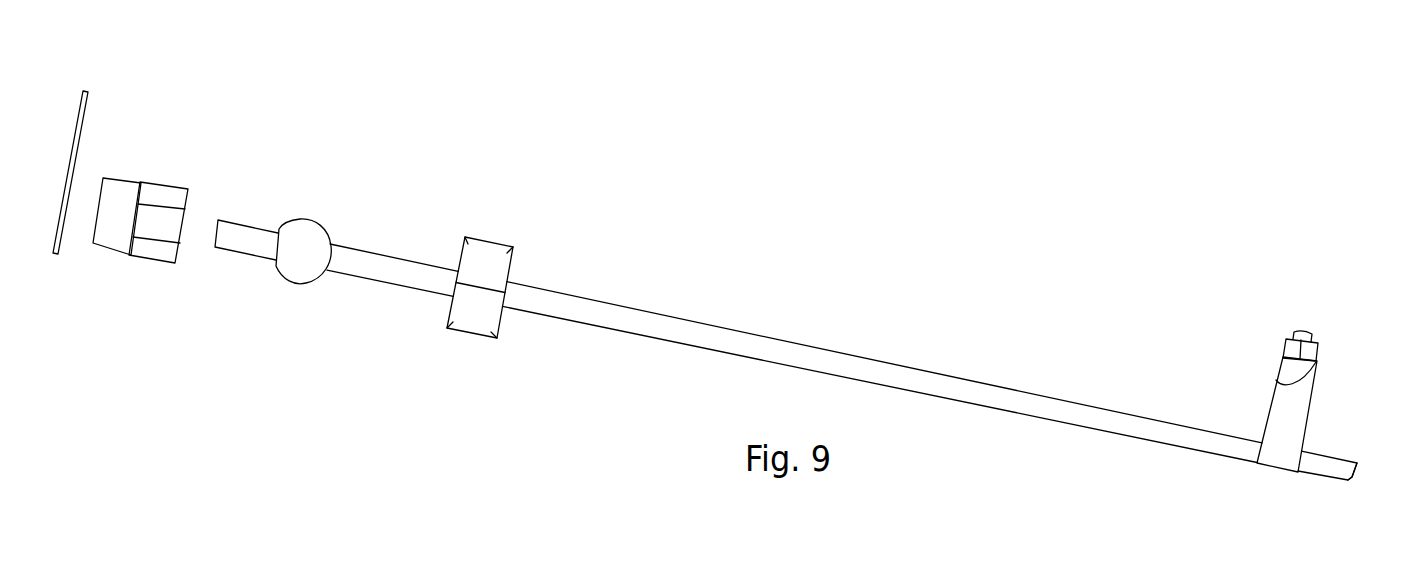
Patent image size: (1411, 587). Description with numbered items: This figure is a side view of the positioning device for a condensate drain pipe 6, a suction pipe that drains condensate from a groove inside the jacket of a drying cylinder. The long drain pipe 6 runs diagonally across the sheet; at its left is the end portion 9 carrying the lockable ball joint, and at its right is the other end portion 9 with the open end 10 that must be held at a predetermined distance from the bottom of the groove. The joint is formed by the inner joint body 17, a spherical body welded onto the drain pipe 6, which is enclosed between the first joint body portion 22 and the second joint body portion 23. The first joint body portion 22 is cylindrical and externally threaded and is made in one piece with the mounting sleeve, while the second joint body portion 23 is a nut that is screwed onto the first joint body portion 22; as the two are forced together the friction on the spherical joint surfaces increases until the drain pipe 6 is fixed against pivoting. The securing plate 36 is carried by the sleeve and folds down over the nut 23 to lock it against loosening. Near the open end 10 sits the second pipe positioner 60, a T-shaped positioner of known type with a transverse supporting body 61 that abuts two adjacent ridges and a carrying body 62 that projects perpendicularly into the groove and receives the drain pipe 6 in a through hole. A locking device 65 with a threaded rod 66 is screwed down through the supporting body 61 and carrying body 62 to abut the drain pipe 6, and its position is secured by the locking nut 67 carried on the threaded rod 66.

The securing plate 36 is at (82, 132).
The first joint body portion 22 is at (150, 262).
The end portion 9 is at (233, 253).
The inner joint body 17 is at (300, 283).
The drain pipe 6 is at (1060, 422).
The second joint body portion 23 is at (468, 335).
The open end 10 is at (1352, 478).
The carrying body 62 is at (1300, 402).
The supporting body 61 is at (1288, 367).
The threaded rod 66 is at (1315, 338).
The locking nut 67 is at (1307, 353).
The locking device 65 is at (1316, 309).
The second pipe positioner 60 is at (1280, 321).